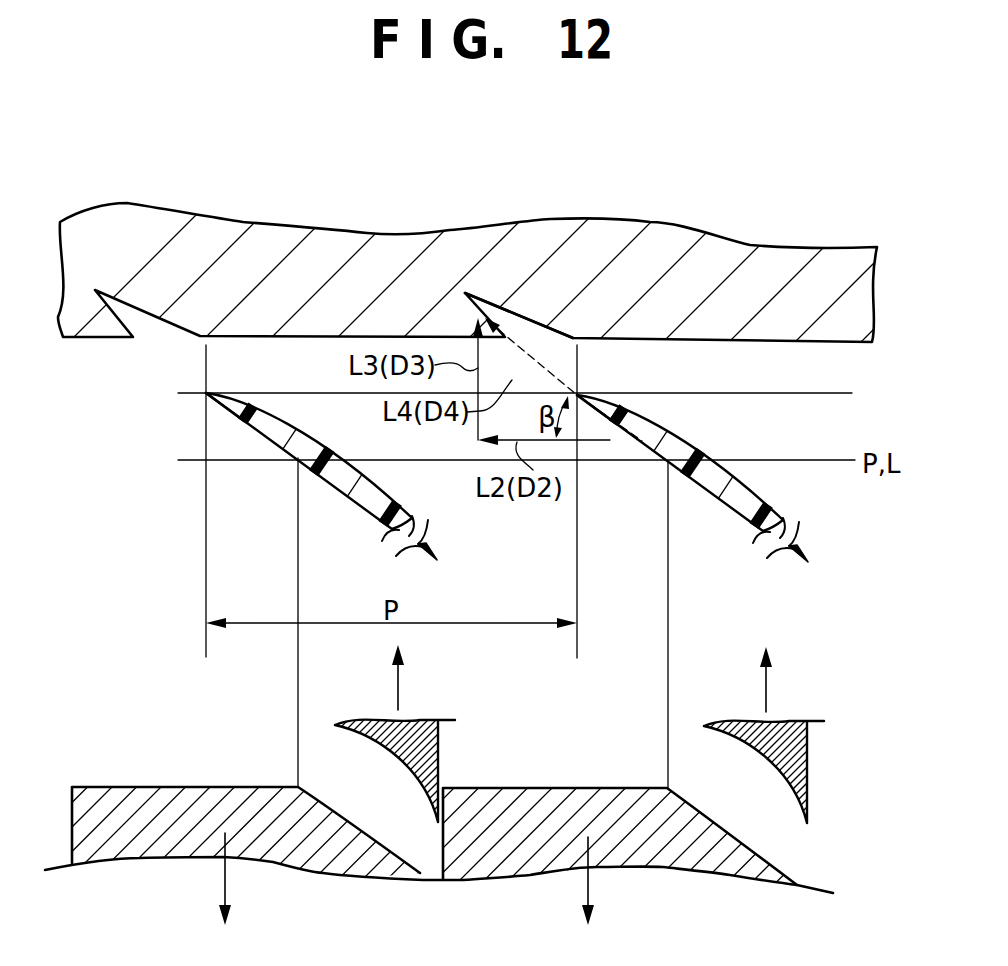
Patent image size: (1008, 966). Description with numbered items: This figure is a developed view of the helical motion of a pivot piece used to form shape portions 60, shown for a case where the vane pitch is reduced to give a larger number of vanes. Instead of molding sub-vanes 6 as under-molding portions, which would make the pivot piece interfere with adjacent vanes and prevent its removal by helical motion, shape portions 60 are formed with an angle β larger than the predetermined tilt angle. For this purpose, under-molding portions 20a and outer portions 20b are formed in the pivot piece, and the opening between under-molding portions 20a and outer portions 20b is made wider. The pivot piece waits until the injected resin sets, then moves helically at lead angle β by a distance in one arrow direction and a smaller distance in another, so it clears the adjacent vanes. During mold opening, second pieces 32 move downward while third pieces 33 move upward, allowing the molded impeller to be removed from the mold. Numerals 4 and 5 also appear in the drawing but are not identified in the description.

The under-molding portion 20a is at (480, 299).
The outer portion 20b is at (527, 322).
The rotor blade 4 is at (382, 480).
The blade tip 5 is at (312, 428).
The sub-vane 6 is at (628, 430).
The shape portion 60 is at (243, 437).
The second piece 32 is at (290, 848).
The third piece 33 is at (417, 738).